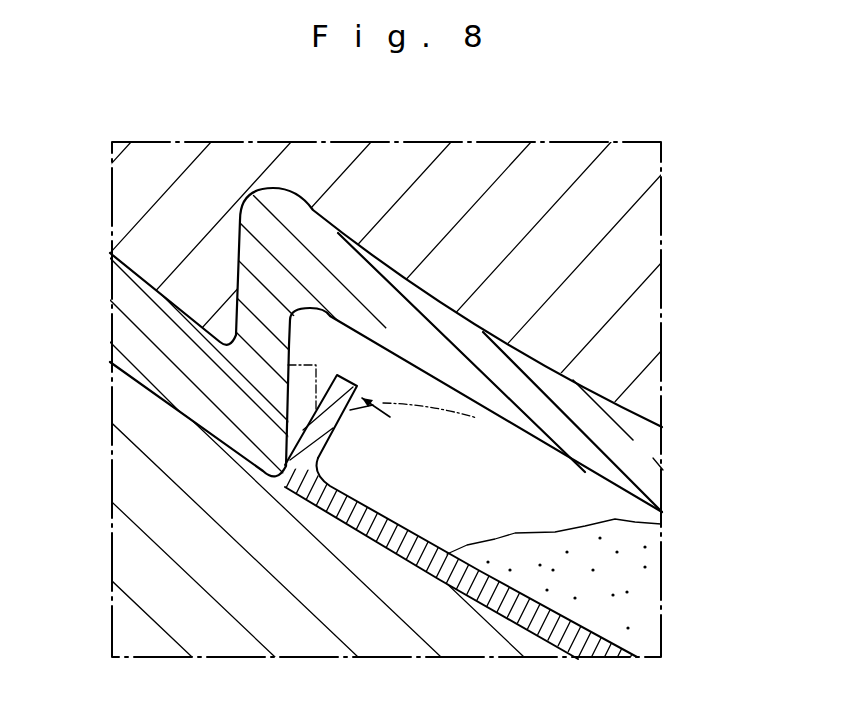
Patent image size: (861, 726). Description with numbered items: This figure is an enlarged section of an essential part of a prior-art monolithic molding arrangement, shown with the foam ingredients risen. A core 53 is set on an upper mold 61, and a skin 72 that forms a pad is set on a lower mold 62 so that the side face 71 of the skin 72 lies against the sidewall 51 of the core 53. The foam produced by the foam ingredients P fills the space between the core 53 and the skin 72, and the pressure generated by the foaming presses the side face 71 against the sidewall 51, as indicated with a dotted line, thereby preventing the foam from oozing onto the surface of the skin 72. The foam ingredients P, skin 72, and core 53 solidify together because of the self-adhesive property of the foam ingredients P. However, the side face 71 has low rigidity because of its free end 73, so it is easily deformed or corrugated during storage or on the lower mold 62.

The sidewall 51 is at (240, 300).
The core 53 is at (643, 452).
The upper mold 61 is at (643, 232).
The lower mold 62 is at (130, 545).
The side face 71 is at (330, 428).
The skin 72 is at (463, 582).
The free end 73 is at (342, 377).
The foam ingredients P is at (540, 553).